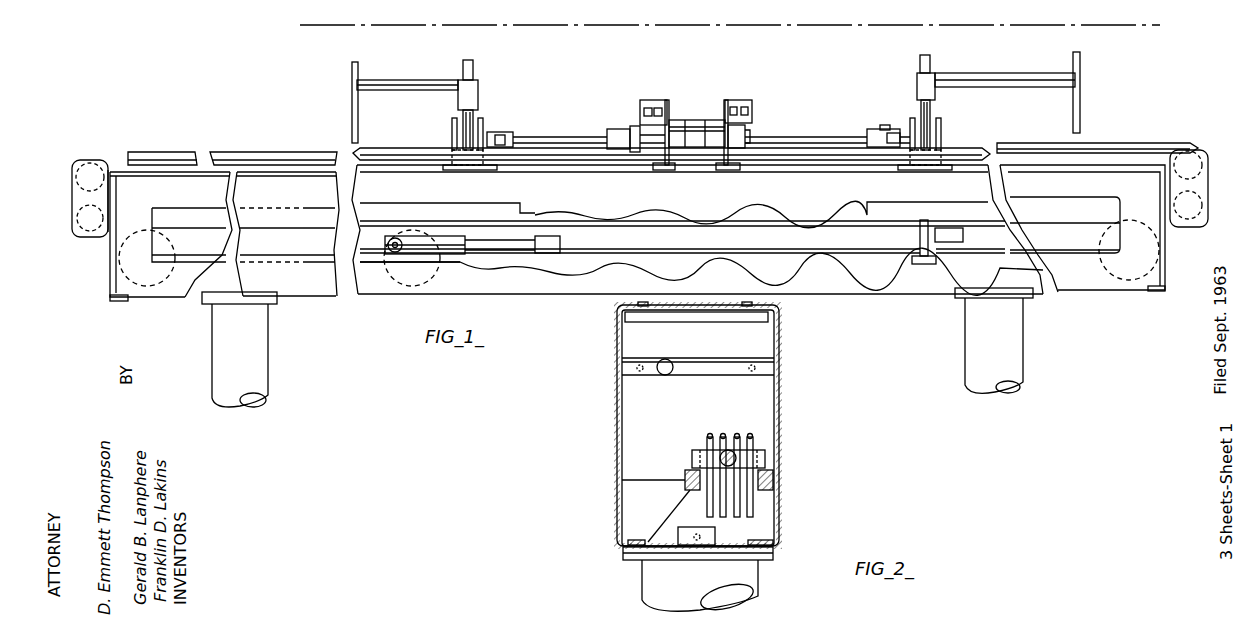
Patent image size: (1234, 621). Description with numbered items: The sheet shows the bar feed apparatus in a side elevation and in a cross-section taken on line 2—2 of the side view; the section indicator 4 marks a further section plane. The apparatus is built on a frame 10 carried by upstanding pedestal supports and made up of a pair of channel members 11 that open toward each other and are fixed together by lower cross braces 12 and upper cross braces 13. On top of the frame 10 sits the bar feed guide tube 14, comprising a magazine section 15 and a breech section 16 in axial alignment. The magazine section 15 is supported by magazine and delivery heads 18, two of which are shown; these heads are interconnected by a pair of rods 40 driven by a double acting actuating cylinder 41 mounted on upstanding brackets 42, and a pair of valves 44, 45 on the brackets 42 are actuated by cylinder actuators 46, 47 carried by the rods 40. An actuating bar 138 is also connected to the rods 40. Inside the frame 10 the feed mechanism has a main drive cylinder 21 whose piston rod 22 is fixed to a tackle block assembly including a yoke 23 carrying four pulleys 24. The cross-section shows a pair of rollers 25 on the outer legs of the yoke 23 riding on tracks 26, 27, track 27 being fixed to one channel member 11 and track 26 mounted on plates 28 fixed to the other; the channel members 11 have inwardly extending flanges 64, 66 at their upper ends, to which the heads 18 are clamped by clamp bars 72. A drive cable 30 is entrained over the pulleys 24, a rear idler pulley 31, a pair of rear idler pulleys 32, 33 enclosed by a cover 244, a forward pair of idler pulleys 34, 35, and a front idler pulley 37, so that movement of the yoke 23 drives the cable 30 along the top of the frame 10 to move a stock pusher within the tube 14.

In FIG. 1, the section line 2— 2 is at (536, 315).
In FIG. 1, the section line 4- 4 is at (315, 80).
In FIG. 1, the frame 10 is at (598, 294).
In FIG. 1, the channel members 11 is at (637, 233).
In FIG. 2, the channel members 11 is at (617, 492).
In FIG. 2, the lower cross braces 12 is at (777, 553).
In FIG. 2, the upper cross braces 13 is at (770, 367).
In FIG. 1, the bar feed guide tube 14 is at (400, 142).
In FIG. 1, the magazine section 15 is at (1018, 143).
In FIG. 1, the breech section 16 is at (247, 153).
In FIG. 1, the magazine and delivery heads 18 is at (497, 96).
In FIG. 1, the main drive cylinder 21 is at (682, 237).
In FIG. 1, the piston rod 22 is at (487, 232).
In FIG. 2, the piston rod 22 is at (735, 435).
In FIG. 1, the yoke 23 is at (440, 232).
In FIG. 2, the yoke 23 is at (690, 446).
In FIG. 1, the pulleys 24 is at (388, 232).
In FIG. 2, the pulleys 24 is at (712, 435).
In FIG. 2, the rollers 25 is at (696, 450).
In FIG. 2, the track 26 is at (685, 474).
In FIG. 1, the track 27 is at (373, 262).
In FIG. 2, the track 27 is at (773, 478).
In FIG. 2, the plates 28 is at (653, 451).
In FIG. 1, the drive cable 30 is at (112, 158).
In FIG. 1, the rear idler pulley 31 is at (170, 244).
In FIG. 1, the rear idler pulley 32 is at (84, 228).
In FIG. 1, the rear idler pulley 33 is at (84, 160).
In FIG. 1, the forward idler pulley 34 is at (1198, 158).
In FIG. 1, the forward idler pulley 35 is at (1196, 222).
In FIG. 1, the front idler pulley 37 is at (1103, 244).
In FIG. 1, the rods 40 is at (573, 135).
In FIG. 1, the actuating cylinder 41 is at (699, 133).
In FIG. 1, the upstanding brackets 42 is at (670, 120).
In FIG. 1, the valve 44 is at (660, 100).
In FIG. 1, the valve 45 is at (739, 100).
In FIG. 1, the cylinder actuator 46 is at (628, 128).
In FIG. 1, the cylinder actuator 47 is at (750, 128).
In FIG. 2, the inwardly extending flange 64 is at (648, 304).
In FIG. 2, the inwardly extending flange 66 is at (742, 304).
In FIG. 2, the clamp bars 72 is at (690, 322).
In FIG. 1, the actuating bar 138 is at (890, 130).
In FIG. 1, the cover 244 is at (72, 203).